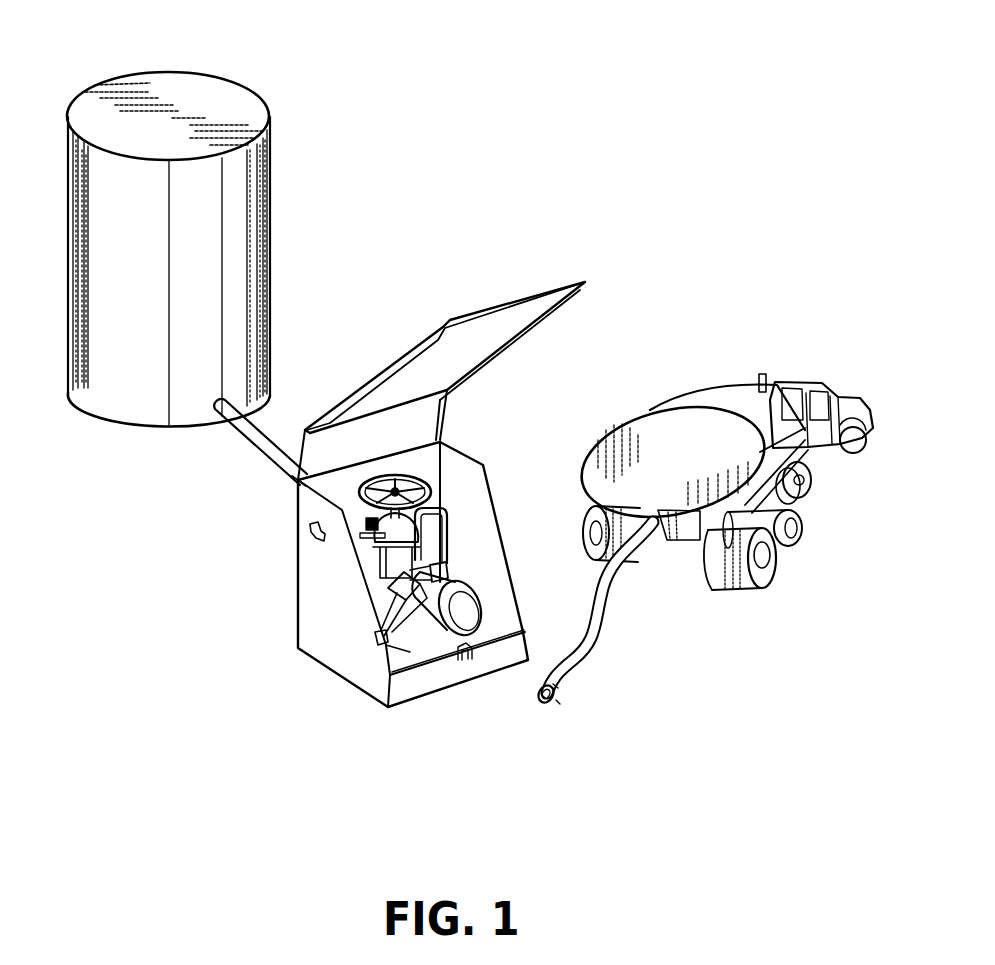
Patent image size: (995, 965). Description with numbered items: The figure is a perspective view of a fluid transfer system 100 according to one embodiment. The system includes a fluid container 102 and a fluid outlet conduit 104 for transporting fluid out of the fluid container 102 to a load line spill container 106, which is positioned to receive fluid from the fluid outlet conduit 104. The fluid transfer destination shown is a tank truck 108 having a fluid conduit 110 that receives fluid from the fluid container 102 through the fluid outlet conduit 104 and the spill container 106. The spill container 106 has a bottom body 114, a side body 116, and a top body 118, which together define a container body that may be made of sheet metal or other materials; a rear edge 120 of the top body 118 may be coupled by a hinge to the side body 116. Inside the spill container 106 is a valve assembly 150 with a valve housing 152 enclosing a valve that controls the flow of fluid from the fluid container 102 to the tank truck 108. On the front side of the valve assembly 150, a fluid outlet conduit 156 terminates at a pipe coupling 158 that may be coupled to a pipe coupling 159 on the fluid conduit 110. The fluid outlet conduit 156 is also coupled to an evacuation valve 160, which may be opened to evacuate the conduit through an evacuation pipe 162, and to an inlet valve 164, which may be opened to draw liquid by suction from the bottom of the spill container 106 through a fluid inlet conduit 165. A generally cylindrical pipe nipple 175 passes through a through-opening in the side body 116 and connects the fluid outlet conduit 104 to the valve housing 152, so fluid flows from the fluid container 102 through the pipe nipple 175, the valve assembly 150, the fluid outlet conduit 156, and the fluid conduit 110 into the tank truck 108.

The fluid transfer system 100 is at (595, 106).
The fluid container 102 is at (222, 78).
The fluid outlet conduit 104 is at (243, 436).
The load line spill container 106 is at (333, 655).
The tank truck 108 is at (702, 385).
The fluid conduit 110 is at (600, 663).
The bottom body 114 is at (407, 653).
The side body 116 is at (317, 548).
The top body 118 is at (498, 332).
The rear edge 120 is at (297, 485).
The valve assembly 150 is at (414, 464).
The valve housing 152 is at (380, 534).
The fluid outlet conduit 156 is at (493, 653).
The pipe coupling 158 is at (472, 618).
The pipe coupling 159 is at (553, 703).
The evacuation valve 160 is at (437, 570).
The evacuation pipe 162 is at (447, 527).
The inlet valve 164 is at (397, 578).
The fluid inlet conduit 165 is at (380, 640).
The pipe nipple 175 is at (368, 522).